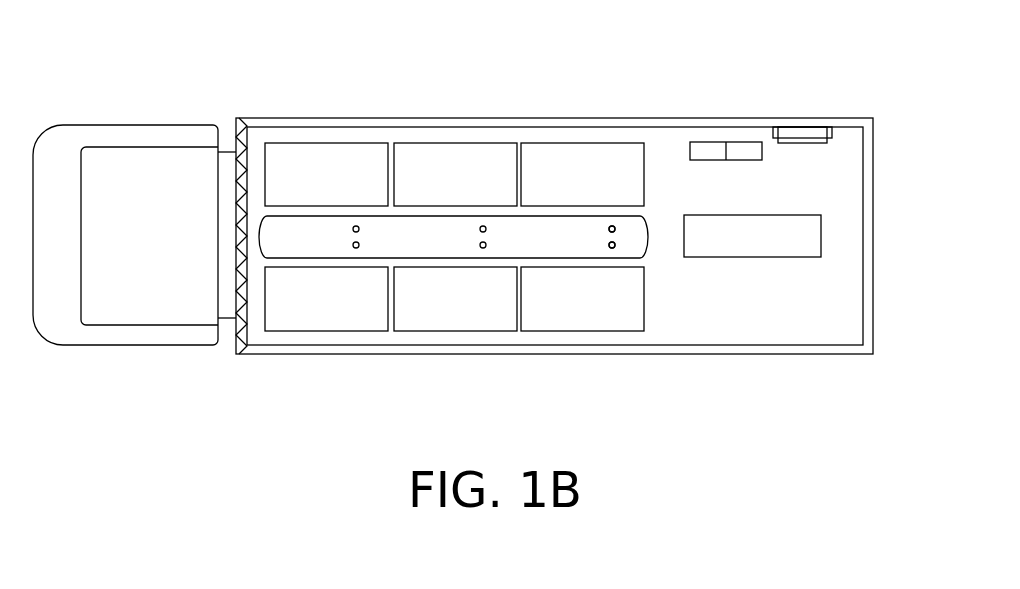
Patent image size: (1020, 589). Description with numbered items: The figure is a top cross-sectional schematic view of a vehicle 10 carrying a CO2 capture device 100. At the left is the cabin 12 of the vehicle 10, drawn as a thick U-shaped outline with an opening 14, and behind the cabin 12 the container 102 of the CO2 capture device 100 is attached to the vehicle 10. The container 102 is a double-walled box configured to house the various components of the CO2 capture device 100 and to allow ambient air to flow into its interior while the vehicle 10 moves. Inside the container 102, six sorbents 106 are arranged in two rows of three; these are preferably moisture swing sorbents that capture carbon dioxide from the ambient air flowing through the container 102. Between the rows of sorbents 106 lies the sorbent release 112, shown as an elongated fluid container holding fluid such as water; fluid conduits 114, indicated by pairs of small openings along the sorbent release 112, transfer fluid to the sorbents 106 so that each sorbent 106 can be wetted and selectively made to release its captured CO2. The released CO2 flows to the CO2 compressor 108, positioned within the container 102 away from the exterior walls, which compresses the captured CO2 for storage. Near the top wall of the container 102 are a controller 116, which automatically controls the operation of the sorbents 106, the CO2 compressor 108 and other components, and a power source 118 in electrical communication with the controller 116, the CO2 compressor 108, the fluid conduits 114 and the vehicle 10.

The vehicle 10 is at (100, 72).
The cabin 12 is at (148, 347).
The clip inner opening 14 is at (148, 150).
The CO2 capture device 100 is at (390, 75).
The container 102 is at (587, 125).
The sorbents 106 is at (454, 237).
The CO2 compressor 108 is at (752, 236).
The sorbent release 112 is at (453, 237).
The fluid conduits 114 is at (620, 245).
The controller 116 is at (803, 132).
The power sources 118 is at (707, 150).